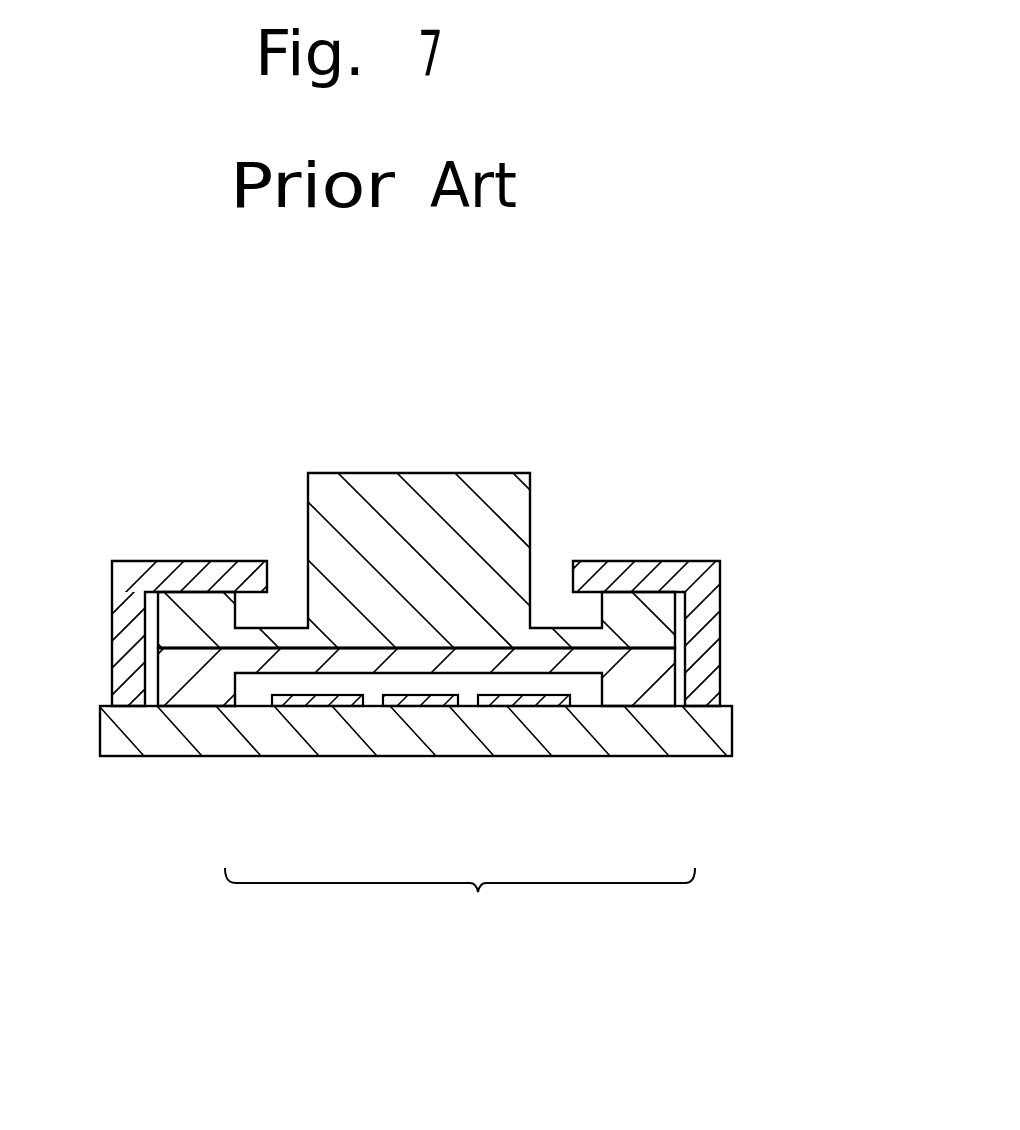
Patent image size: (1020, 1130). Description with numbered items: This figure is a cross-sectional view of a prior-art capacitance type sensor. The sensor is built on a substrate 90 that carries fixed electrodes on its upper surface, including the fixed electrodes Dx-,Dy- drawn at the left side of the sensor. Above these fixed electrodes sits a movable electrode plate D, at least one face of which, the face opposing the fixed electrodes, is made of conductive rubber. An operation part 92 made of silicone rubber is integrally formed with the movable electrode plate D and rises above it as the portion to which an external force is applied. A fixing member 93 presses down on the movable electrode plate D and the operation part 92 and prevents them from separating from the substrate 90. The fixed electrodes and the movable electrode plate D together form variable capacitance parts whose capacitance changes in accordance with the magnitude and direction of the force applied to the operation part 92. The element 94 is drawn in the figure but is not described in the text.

The substrate 90 is at (732, 725).
The operation part 92 is at (445, 488).
The fixing member 93 is at (147, 568).
The flexible portion / supporting member 94 is at (197, 693).
The movable electrode plate D is at (470, 662).
The fixed electrodes Dx-,Dy- is at (310, 700).